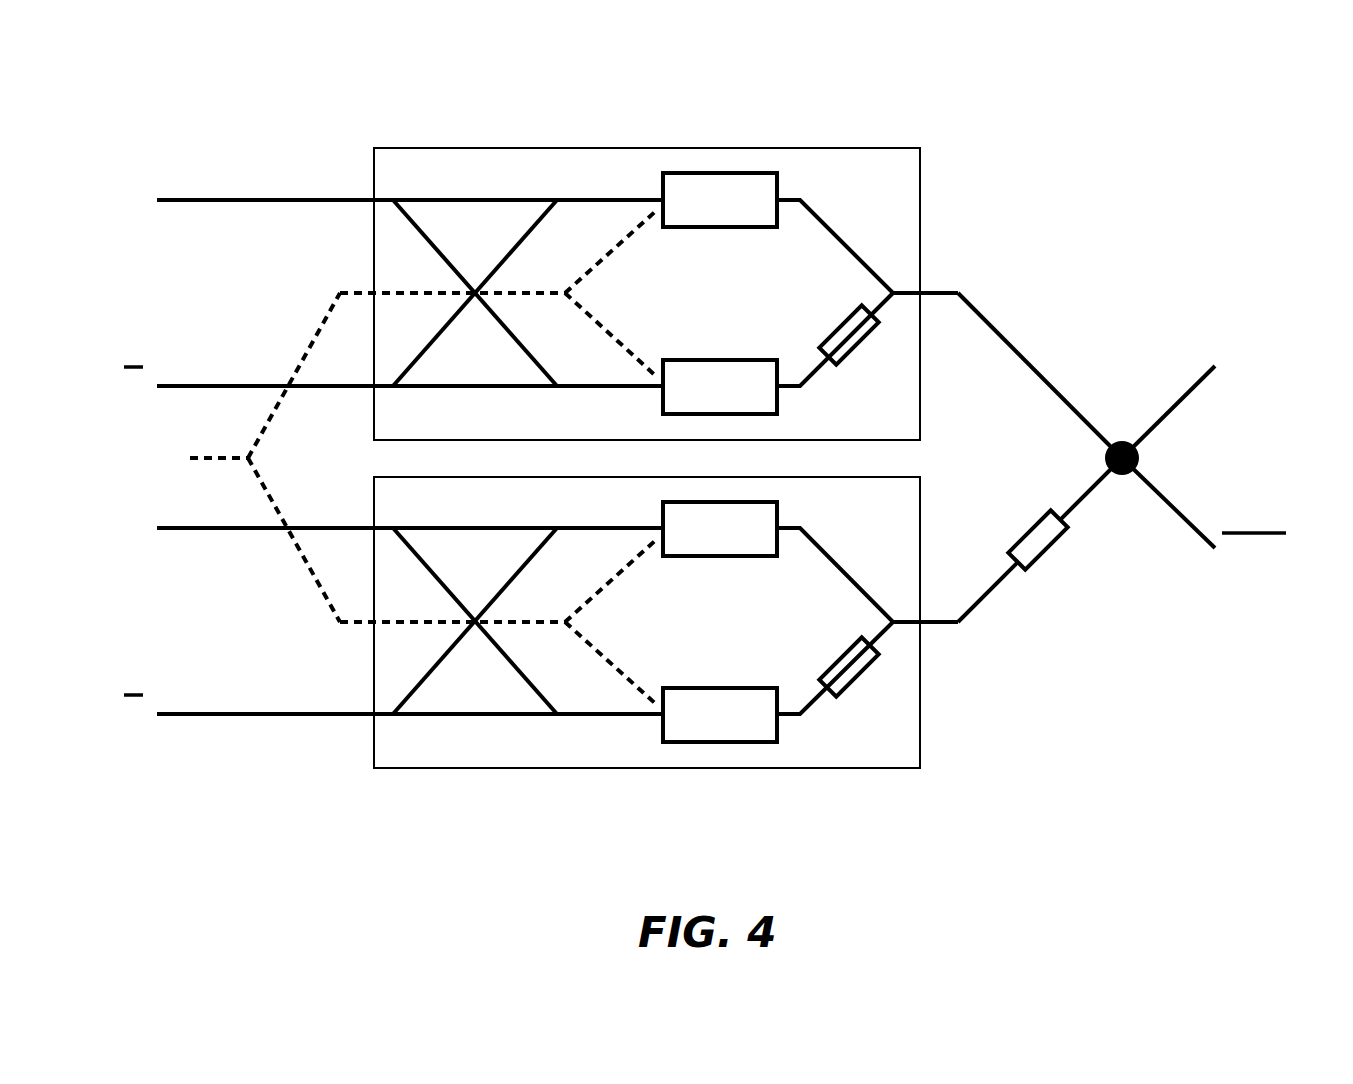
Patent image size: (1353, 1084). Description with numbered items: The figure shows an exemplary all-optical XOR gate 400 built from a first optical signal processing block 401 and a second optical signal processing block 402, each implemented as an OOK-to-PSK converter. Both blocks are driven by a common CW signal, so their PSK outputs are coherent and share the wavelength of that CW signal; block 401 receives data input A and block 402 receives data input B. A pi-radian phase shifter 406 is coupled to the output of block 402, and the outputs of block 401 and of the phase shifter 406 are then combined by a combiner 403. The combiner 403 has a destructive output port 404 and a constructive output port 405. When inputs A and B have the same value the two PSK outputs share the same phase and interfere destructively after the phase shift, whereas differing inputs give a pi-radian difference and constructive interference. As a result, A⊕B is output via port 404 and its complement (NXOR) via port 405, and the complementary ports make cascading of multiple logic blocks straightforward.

The all-optical XOR gate 400 is at (1158, 80).
The first optical signal processing block 401 is at (640, 148).
The second optical signal processing block 402 is at (640, 768).
The combiner 403 is at (1121, 440).
The destructive output port 404 is at (1207, 368).
The constructive output port 405 is at (1197, 534).
The pi-radian phase shifter 406 is at (1047, 558).